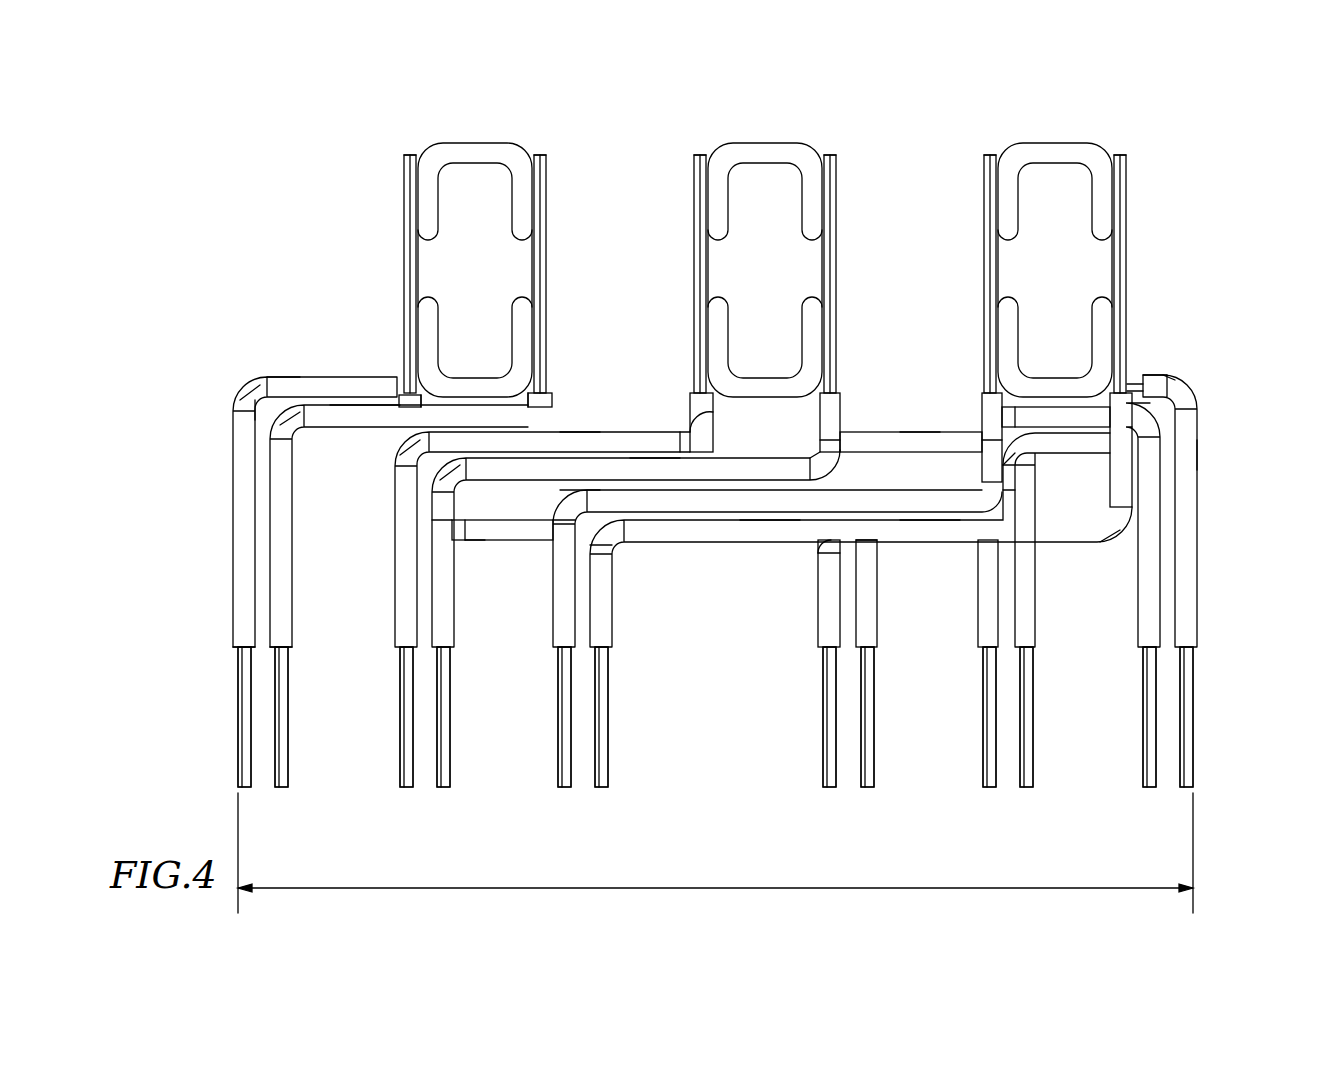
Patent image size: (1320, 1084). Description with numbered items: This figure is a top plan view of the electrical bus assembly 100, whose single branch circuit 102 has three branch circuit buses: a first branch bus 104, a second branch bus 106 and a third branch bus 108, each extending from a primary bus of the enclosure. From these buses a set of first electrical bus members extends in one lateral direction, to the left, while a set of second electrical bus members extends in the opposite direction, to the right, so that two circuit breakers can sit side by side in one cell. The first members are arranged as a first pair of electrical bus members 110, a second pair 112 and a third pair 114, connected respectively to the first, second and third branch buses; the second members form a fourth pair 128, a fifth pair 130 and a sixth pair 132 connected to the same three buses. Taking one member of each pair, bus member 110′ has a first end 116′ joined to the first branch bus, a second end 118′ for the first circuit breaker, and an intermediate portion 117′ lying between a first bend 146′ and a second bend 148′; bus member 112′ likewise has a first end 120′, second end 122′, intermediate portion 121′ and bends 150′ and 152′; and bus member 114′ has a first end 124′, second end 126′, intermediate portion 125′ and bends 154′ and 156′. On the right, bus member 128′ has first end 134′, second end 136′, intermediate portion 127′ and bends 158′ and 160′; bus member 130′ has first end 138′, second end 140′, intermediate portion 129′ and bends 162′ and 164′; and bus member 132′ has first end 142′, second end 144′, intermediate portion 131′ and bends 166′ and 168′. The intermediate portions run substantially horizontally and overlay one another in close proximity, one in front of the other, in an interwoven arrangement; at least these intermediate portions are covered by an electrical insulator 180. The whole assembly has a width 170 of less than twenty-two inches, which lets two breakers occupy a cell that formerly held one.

The electrical bus assembly 100 is at (265, 252).
The single branch circuit 102 is at (320, 218).
The first branch bus 104 is at (1010, 236).
The second branch bus 106 is at (720, 232).
The third branch bus 108 is at (430, 210).
The first pair of electrical bus members 110 is at (588, 797).
The first electrical bus member 110′ is at (605, 685).
The second pair of electrical bus members 112 is at (422, 797).
The second electrical bus member 112′ is at (445, 700).
The third pair of electrical bus members 114 is at (270, 797).
The third electrical bus member 114′ is at (285, 668).
The first end 116′ is at (1135, 172).
The intermediate portion 117′ is at (925, 545).
The second end 118′ is at (620, 778).
The first end 120′ is at (844, 175).
The intermediate portion 121′ is at (652, 470).
The second end 122′ is at (458, 783).
The first end 124′ is at (556, 160).
The intermediate portion 125′ is at (370, 412).
The second end 126′ is at (292, 797).
The intermediate portion 127′ is at (1150, 360).
The fourth pair of electrical bus members 128 is at (1165, 797).
The fourth electrical bus member 128′ is at (1190, 668).
The intermediate portion 129′ is at (915, 428).
The fifth pair of electrical bus members 130 is at (1002, 797).
The fifth electrical bus member 130′ is at (1030, 668).
The intermediate portion 131′ is at (572, 490).
The sixth pair of electrical bus members 132 is at (840, 797).
The sixth electrical bus member 132′ is at (870, 705).
The first end 134′ is at (1130, 150).
The second end 136′ is at (1200, 780).
The first end 138′ is at (835, 150).
The second end 140′ is at (1032, 783).
The first end 142′ is at (548, 150).
The second end 144′ is at (880, 790).
The first bend 146′ is at (1115, 540).
The second bend 148′ is at (605, 540).
The first bend 150′ is at (820, 462).
The second bend 152′ is at (450, 470).
The first bend 154′ is at (515, 395).
The second bend 156′ is at (290, 430).
The first bend 158′ is at (1140, 375).
The second bend 160′ is at (1165, 380).
The first bend 162′ is at (838, 440).
The second bend 164′ is at (1015, 445).
The first bend 166′ is at (480, 542).
The second bend 168′ is at (865, 525).
The width 170 is at (690, 888).
The electrical insulator 180 is at (262, 380).